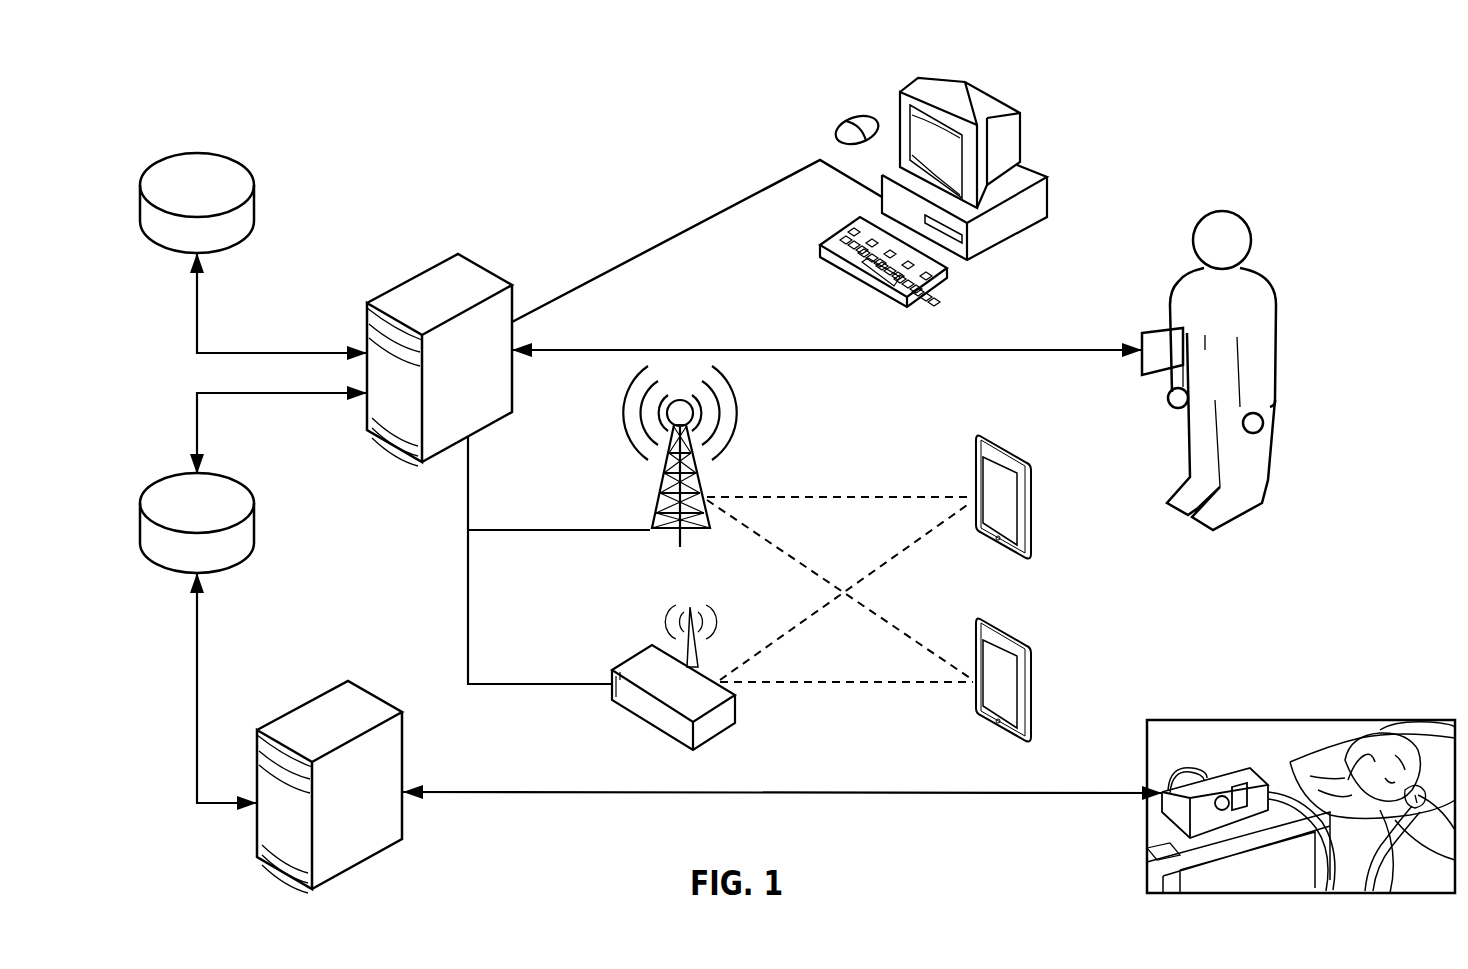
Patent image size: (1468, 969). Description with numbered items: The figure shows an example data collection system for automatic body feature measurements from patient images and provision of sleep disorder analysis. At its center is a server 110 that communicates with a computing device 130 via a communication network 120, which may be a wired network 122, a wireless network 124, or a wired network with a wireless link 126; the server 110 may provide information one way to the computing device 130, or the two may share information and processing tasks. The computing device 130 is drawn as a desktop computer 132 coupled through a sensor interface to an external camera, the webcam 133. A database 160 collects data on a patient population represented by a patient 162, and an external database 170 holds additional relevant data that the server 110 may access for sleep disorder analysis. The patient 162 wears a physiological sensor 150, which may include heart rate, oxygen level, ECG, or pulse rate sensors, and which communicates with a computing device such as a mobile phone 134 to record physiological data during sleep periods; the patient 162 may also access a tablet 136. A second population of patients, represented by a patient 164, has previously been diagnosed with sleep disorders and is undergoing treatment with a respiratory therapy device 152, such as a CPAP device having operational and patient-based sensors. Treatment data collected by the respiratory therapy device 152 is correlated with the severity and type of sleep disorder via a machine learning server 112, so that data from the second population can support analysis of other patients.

The server 110 is at (400, 283).
The machine learning server 112 is at (292, 708).
The communication network 120 is at (583, 123).
The wired network 122 is at (682, 233).
The wireless network 124 is at (667, 483).
The wired network with a wireless link 126 is at (633, 670).
The computing device 130 is at (793, 62).
The computer 132 is at (902, 92).
The webcam 133 is at (843, 117).
The mobile phone 134 is at (983, 447).
The tablet 136 is at (983, 627).
The physiological sensor 150 is at (1150, 330).
The respiratory therapy device 152 is at (1257, 770).
The database 160 is at (177, 477).
The patient 162 is at (1187, 270).
The patient 164 is at (1393, 743).
The external database 170 is at (178, 153).